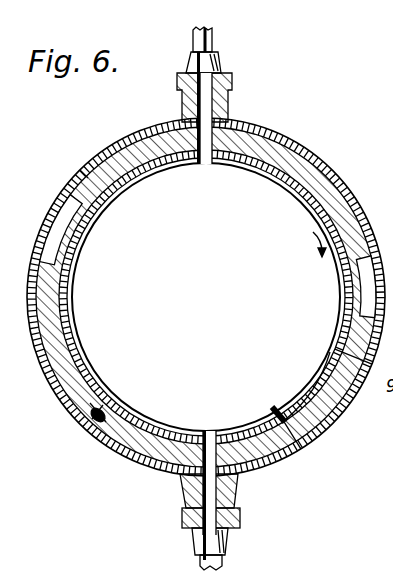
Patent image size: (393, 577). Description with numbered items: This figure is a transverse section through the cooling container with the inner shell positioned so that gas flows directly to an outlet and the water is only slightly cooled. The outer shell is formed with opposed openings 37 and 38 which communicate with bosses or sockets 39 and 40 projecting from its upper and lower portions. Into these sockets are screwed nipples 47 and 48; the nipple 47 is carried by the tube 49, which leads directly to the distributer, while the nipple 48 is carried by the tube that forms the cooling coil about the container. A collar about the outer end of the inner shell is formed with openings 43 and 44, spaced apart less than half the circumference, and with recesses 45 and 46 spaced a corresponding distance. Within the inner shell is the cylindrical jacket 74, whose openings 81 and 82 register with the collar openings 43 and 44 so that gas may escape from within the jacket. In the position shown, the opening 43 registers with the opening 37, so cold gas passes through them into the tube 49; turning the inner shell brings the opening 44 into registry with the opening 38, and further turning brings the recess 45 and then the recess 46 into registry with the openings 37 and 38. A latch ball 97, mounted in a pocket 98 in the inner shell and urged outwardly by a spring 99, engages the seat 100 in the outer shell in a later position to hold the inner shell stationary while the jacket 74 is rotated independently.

The opening 37 is at (233, 118).
The opening 43 is at (282, 139).
The cylindrical jacket 74 is at (78, 327).
The recess 45 is at (60, 207).
The recess 46 is at (368, 270).
The opening 44 is at (300, 433).
The opening 82 is at (287, 415).
The socket 39 is at (232, 100).
The nipple 47 is at (218, 58).
The tube 49 is at (212, 36).
The opening 81 is at (205, 163).
The socket 40 is at (182, 493).
The nipple 48 is at (240, 520).
The opening 38 is at (213, 462).
The latch ball 97 is at (93, 430).
The pocket 98 is at (100, 405).
The spring 99 is at (105, 410).
The seat 100 is at (84, 174).